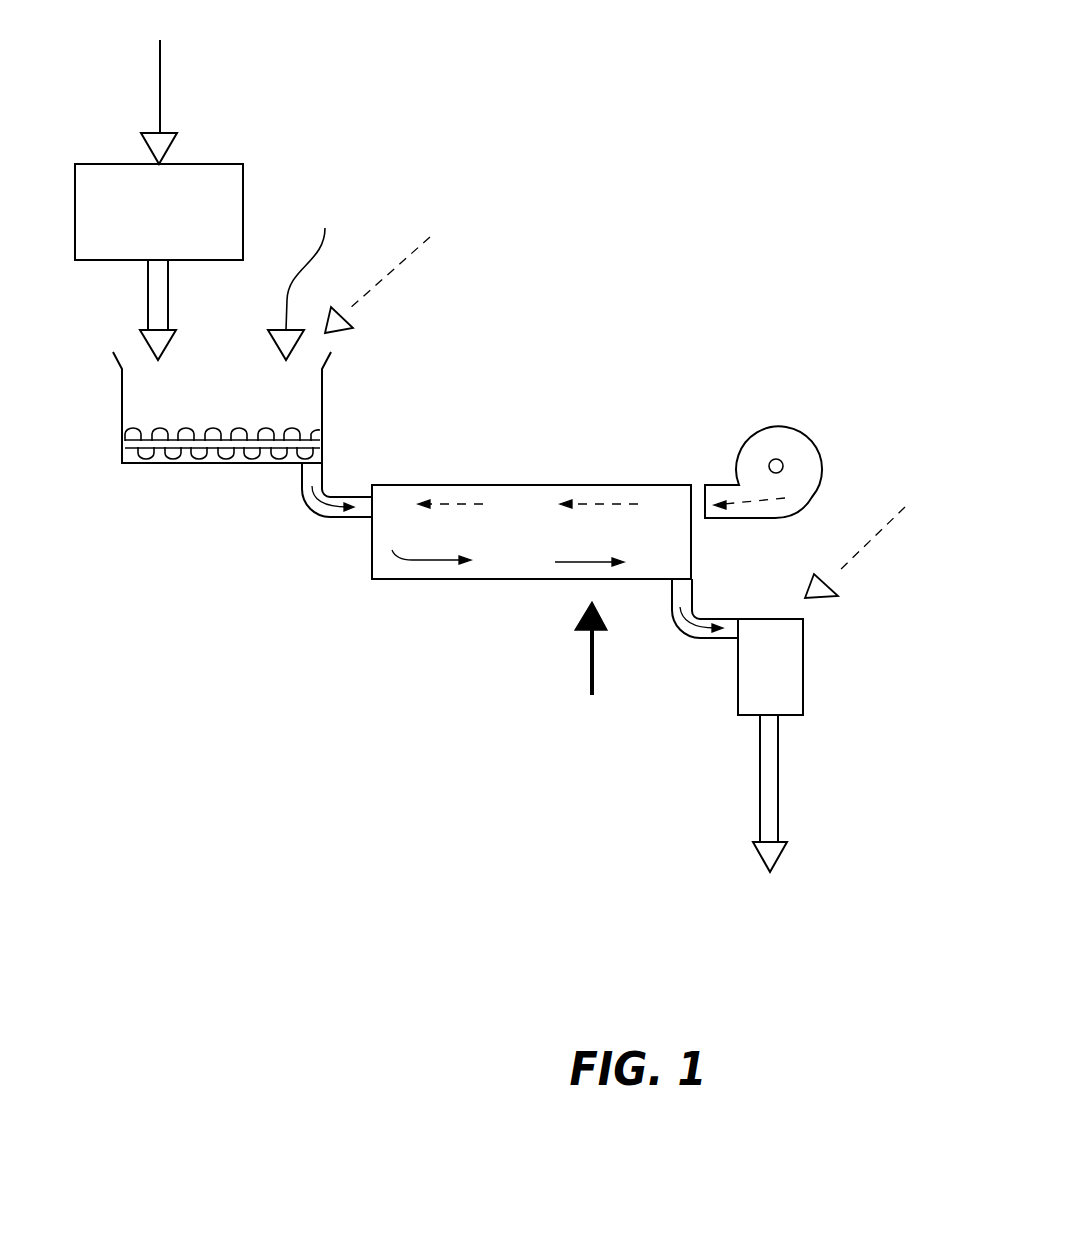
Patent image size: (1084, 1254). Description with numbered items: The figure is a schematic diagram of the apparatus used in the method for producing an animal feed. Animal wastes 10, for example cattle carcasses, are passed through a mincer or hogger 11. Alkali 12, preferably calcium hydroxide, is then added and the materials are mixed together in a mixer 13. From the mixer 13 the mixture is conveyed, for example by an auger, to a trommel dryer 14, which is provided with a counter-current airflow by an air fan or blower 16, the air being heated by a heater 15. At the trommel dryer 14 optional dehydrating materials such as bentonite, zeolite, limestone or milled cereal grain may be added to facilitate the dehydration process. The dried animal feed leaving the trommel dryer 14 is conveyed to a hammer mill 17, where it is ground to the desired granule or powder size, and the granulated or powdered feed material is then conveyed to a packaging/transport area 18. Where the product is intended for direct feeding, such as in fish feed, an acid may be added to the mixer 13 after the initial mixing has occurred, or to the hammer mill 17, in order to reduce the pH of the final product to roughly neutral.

The animal wastes 10 is at (159, 85).
The mincer or hogger 11 is at (252, 171).
The alkali 12 is at (304, 278).
The mixer 13 is at (175, 469).
The trommel dryer 14 is at (404, 588).
The heater 15 is at (582, 669).
The air fan or blower 16 is at (824, 438).
The hammer mill 17 is at (810, 668).
The packaging/transport area 18 is at (770, 811).